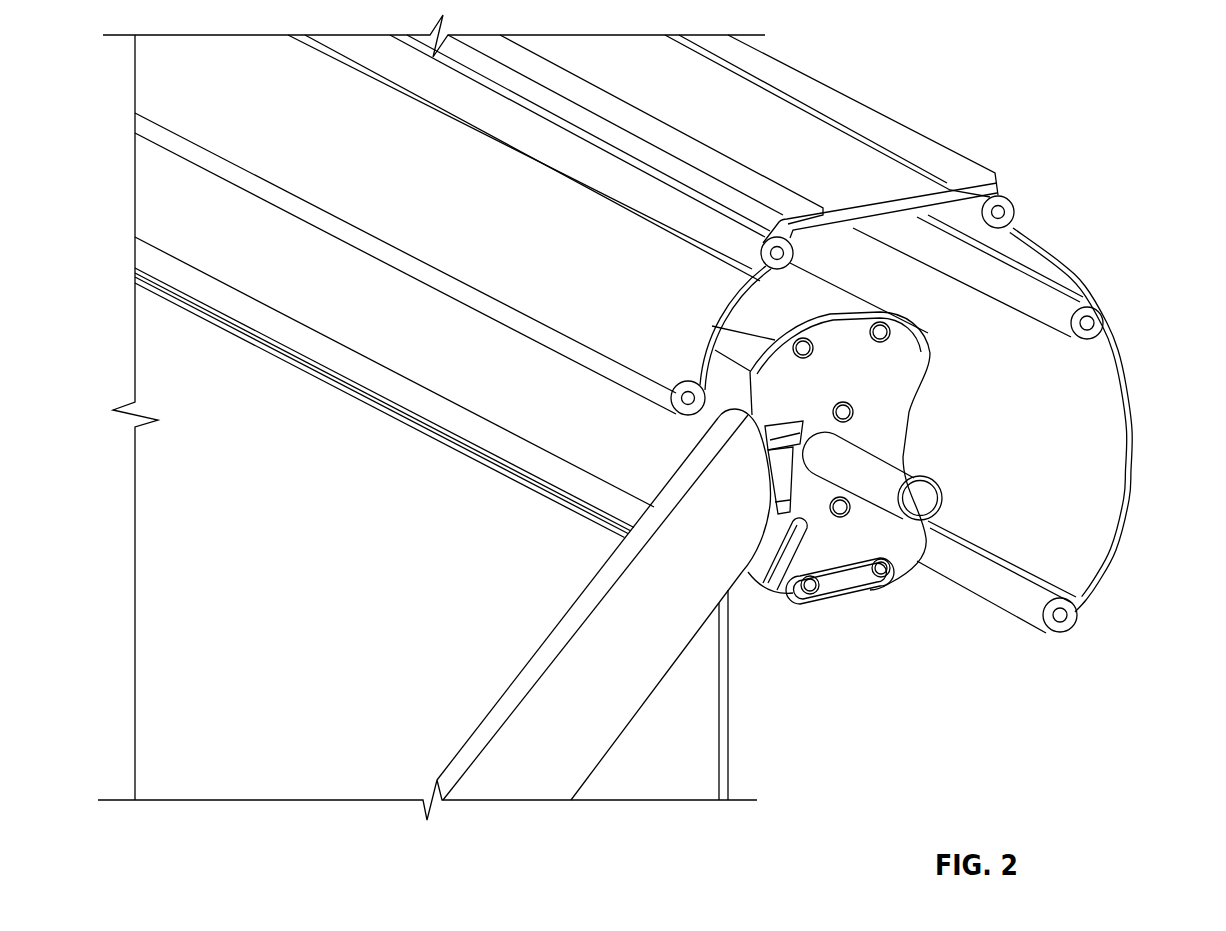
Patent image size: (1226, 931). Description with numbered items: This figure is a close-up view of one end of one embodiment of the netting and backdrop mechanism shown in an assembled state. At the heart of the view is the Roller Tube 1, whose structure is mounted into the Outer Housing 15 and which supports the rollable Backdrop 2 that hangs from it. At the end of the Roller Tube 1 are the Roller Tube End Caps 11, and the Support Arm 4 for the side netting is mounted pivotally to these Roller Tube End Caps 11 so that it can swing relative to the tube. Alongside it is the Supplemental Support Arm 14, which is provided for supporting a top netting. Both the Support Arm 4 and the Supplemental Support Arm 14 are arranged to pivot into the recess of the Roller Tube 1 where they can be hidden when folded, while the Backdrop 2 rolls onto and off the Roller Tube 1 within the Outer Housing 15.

The Roller Tube 1 is at (820, 297).
The Backdrop 2 is at (245, 648).
The Support Arm 4 is at (615, 698).
The Roller Tube End Caps 11 is at (890, 375).
The Supplemental Support Arm 14 is at (757, 588).
The Outer Housing 15 is at (900, 183).